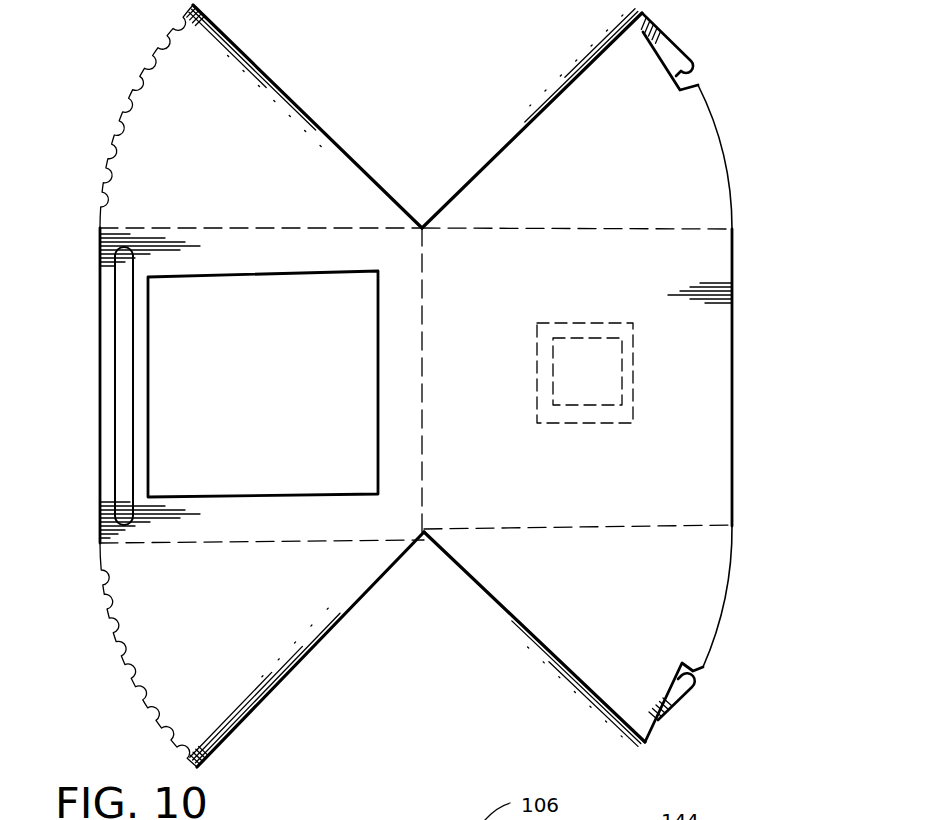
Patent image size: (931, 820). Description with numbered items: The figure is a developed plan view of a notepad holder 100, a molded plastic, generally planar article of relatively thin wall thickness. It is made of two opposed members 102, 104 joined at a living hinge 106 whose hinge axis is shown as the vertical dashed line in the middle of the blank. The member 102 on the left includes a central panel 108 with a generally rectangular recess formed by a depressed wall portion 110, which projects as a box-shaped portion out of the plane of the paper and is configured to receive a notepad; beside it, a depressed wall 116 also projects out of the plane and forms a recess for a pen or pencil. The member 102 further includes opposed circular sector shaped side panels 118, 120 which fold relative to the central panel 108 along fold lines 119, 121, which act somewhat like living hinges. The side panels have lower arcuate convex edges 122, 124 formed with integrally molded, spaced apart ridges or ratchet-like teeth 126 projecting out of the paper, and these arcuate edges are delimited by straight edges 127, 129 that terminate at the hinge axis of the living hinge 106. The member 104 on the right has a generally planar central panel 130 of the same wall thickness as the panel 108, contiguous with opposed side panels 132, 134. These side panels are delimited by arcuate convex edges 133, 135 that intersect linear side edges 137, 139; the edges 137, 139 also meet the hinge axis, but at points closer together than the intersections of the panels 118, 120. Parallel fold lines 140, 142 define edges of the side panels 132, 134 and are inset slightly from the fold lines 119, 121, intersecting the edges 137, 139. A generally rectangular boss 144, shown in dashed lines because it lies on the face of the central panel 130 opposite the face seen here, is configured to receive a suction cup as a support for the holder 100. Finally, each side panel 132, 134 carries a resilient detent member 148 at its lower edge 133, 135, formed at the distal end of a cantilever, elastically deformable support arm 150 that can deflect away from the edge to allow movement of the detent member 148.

The notepad holder 100 is at (428, 75).
The member 102 is at (108, 128).
The member 104 is at (740, 322).
The living hinge 106 is at (423, 300).
The central panel 108 is at (103, 530).
The depressed wall portion 110 is at (267, 404).
The depressed wall 116 is at (124, 415).
The side panel 118 is at (245, 50).
The fold line 119 is at (228, 228).
The side panel 120 is at (278, 690).
The fold line 121 is at (183, 545).
The arcuate convex edge 122 is at (140, 72).
The arcuate convex edge 124 is at (120, 648).
The ratchet-like teeth 126 is at (133, 127).
The linear edge 127 is at (350, 142).
The linear edge 129 is at (325, 645).
The central panel 130 is at (707, 423).
The side panel 132 is at (530, 135).
The arcuate convex edge 133 is at (740, 160).
The side panel 134 is at (520, 618).
The arcuate convex edge 135 is at (742, 565).
The linear side edge 137 is at (577, 80).
The linear side edge 139 is at (580, 688).
The fold line 140 is at (553, 228).
The fold line 142 is at (547, 530).
The boss 144 is at (533, 428).
The detent member 148 is at (695, 68).
The support arm 150 is at (678, 50).